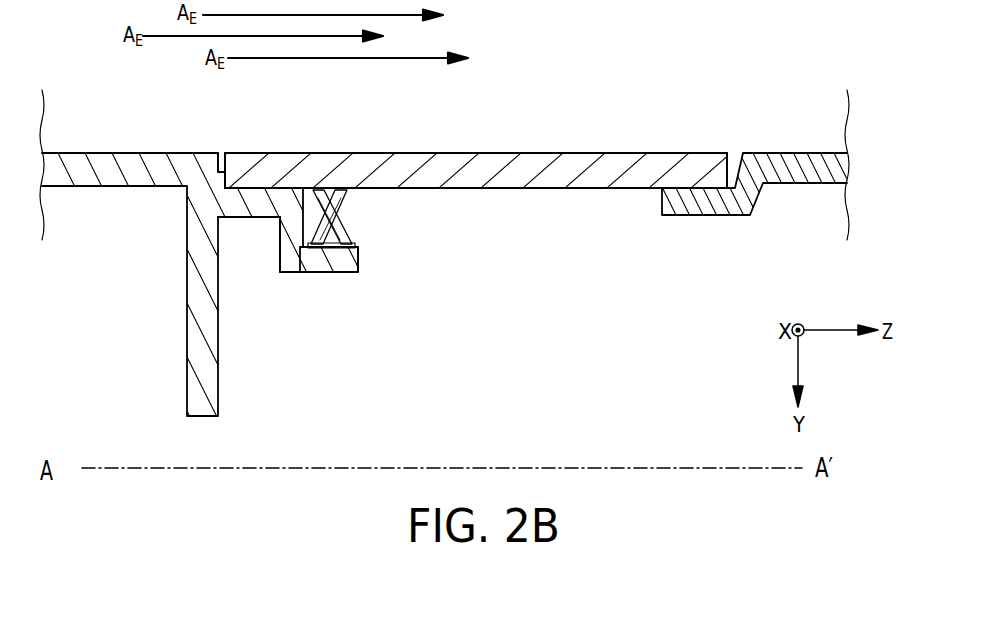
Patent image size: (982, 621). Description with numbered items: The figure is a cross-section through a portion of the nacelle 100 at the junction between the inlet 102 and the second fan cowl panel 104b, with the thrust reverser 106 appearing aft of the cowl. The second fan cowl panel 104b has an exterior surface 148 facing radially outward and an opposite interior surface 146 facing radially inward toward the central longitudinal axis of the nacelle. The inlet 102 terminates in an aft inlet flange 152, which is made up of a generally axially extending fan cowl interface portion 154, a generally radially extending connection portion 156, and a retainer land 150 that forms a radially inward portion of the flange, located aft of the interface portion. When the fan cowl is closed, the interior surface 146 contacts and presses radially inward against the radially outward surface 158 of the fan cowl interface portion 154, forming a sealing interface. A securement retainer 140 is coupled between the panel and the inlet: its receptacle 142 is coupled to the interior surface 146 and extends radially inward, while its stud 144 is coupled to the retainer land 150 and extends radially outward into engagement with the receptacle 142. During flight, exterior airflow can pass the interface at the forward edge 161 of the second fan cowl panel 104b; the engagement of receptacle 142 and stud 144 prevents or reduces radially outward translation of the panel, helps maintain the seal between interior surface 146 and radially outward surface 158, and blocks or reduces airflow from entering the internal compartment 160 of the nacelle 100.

The nacelle 100 is at (468, 216).
The inlet 102 is at (150, 163).
The second fan cowl panel 104b is at (472, 168).
The thrust reverser 106 is at (802, 152).
The securement retainer 140 is at (388, 254).
The receptacle 142 is at (349, 234).
The stud 144 is at (333, 210).
The interior surface 146 is at (511, 190).
The exterior surface 148 is at (548, 152).
The retainer land 150 is at (328, 263).
The aft inlet flange 152 is at (288, 296).
The fan cowl interface portion 154 is at (240, 205).
The connection portion 156 is at (290, 243).
The radially outward surface 158 is at (285, 186).
The internal compartment 160 is at (506, 419).
The forward edge 161 is at (214, 170).